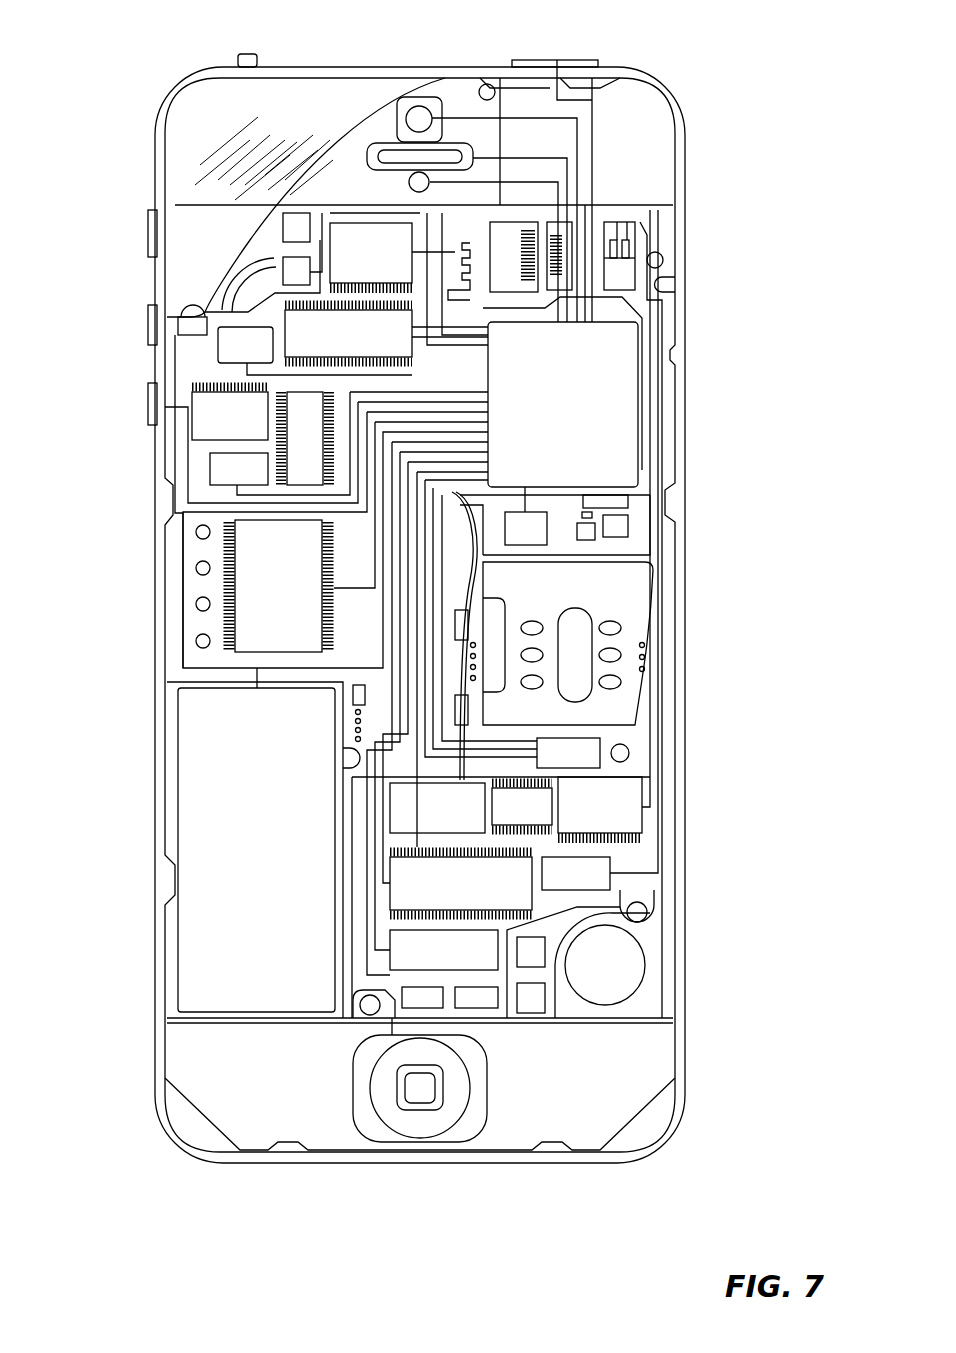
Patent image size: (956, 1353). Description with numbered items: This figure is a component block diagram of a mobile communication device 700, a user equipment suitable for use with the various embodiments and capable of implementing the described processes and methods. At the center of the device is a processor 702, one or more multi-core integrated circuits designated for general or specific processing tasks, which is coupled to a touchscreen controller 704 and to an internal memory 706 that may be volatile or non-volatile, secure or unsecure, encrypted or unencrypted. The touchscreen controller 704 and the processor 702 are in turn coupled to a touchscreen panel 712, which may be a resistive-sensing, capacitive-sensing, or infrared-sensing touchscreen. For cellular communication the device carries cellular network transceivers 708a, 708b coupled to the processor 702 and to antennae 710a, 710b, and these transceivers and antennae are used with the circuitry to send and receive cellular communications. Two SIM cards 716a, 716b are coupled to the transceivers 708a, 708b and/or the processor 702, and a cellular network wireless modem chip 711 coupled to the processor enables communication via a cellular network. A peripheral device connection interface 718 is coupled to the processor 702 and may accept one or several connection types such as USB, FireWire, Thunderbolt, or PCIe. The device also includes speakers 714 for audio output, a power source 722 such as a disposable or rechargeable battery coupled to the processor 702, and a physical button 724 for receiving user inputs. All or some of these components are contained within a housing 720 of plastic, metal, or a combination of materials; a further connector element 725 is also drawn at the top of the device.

The mobile communication device 700 is at (110, 56).
The processor 702 is at (563, 404).
The touchscreen controller 704 is at (371, 255).
The internal memory 706 is at (278, 586).
The cellular network transceiver 708a is at (572, 233).
The cellular network transceiver 708b is at (305, 438).
The antenna 710a is at (348, 333).
The antenna 710b is at (625, 290).
The cellular network wireless modem chip 711 is at (461, 883).
The touchscreen panel 712 is at (195, 155).
The speakers 714 is at (375, 142).
The SIM card 716a is at (568, 753).
The SIM card 716b is at (576, 873).
The peripheral device connection interface 718 is at (444, 950).
The housing 720 is at (686, 1046).
The power source 722 is at (256, 850).
The physical button 724 is at (427, 1097).
The connector 725 is at (555, 62).